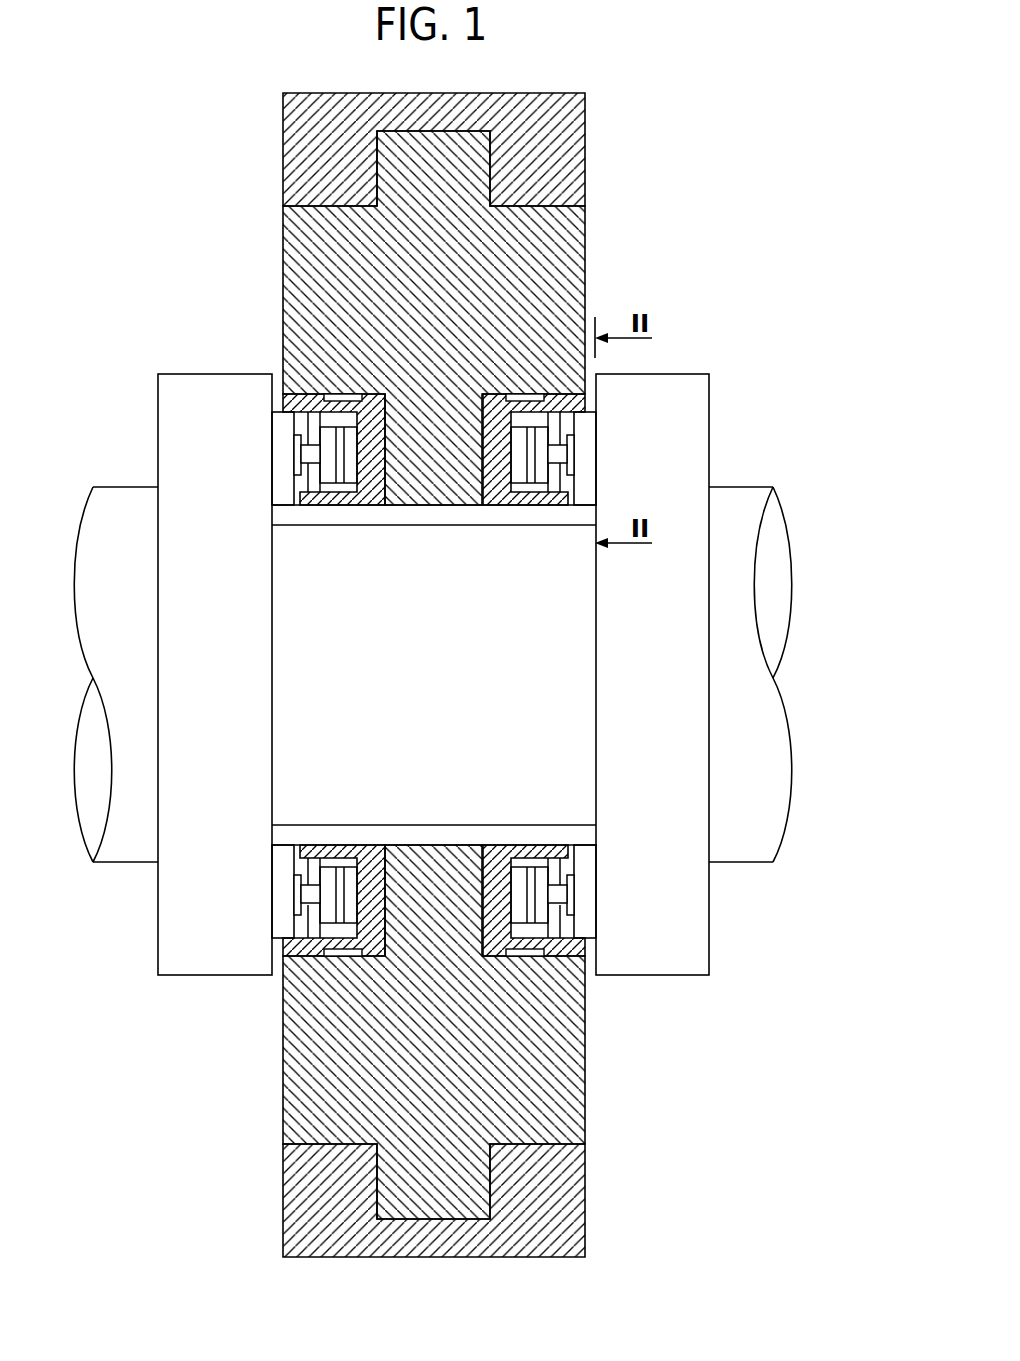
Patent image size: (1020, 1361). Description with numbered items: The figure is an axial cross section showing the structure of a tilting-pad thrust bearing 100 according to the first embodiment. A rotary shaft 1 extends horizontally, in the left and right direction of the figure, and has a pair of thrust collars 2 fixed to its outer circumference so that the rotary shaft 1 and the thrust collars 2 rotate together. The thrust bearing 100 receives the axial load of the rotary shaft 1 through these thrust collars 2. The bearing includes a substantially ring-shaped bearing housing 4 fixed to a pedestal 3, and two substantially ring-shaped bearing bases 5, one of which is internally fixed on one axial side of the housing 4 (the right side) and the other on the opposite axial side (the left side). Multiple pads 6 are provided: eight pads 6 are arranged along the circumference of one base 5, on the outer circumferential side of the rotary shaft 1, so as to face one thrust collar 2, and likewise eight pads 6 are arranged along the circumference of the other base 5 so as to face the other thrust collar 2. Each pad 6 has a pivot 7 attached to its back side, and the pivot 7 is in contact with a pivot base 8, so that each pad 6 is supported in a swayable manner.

The tilting-pad thrust bearing 100 is at (263, 266).
The rotary shaft 1 is at (447, 707).
The thrust collar 2 is at (210, 962).
The pedestal 3 is at (577, 1207).
The bearing housing 4 is at (578, 1108).
The bearing base 5 is at (372, 495).
The pad 6 is at (281, 434).
The pivot 7 is at (298, 457).
The pivot base 8 is at (313, 458).